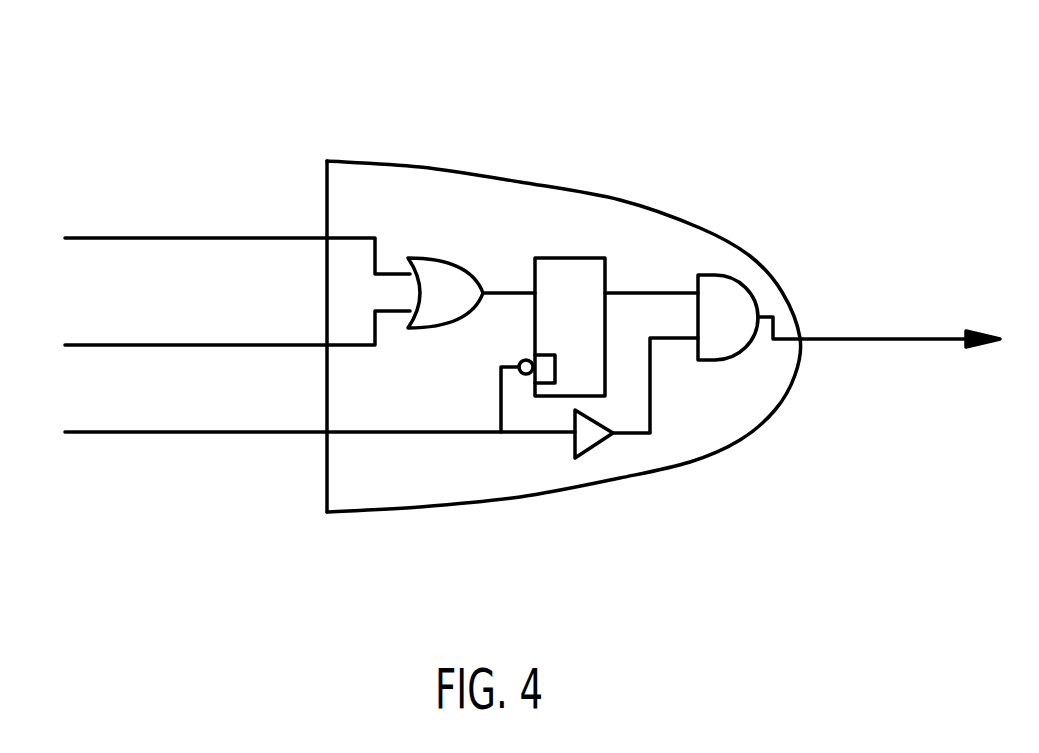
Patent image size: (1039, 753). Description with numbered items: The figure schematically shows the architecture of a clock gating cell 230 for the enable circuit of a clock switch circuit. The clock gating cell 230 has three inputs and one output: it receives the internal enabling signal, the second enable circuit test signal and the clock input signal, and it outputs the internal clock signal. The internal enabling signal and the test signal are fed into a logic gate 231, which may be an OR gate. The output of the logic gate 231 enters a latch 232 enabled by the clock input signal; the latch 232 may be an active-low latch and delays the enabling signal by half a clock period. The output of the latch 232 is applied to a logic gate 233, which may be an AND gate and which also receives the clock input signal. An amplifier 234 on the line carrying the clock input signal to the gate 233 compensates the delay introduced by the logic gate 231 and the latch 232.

The clock gating cell 230 is at (738, 93).
The logic gate 231 is at (440, 272).
The latch 232 is at (572, 272).
The logic gate 233 is at (723, 288).
The amplifier 234 is at (593, 445).